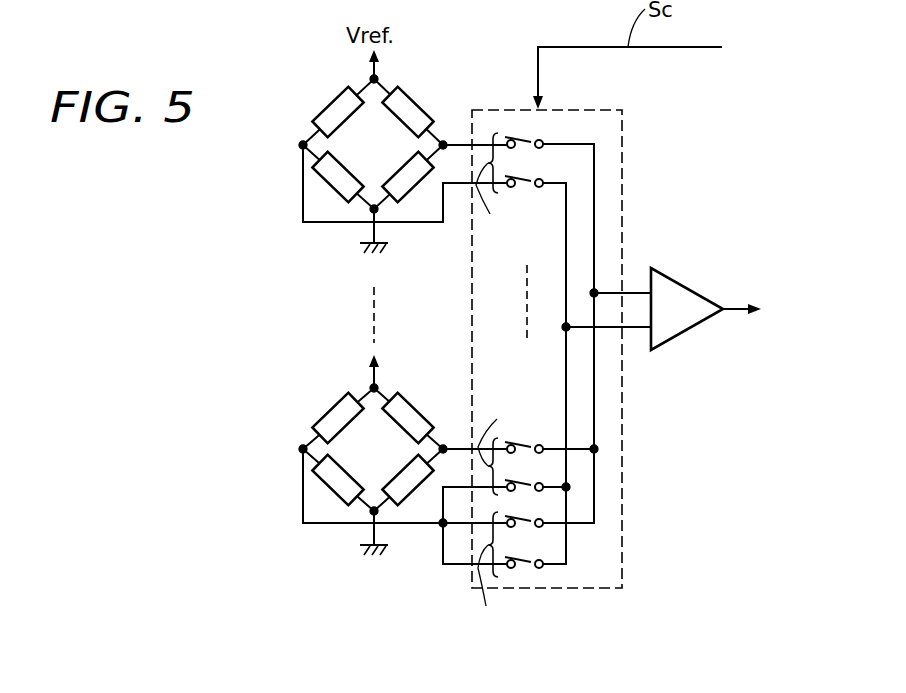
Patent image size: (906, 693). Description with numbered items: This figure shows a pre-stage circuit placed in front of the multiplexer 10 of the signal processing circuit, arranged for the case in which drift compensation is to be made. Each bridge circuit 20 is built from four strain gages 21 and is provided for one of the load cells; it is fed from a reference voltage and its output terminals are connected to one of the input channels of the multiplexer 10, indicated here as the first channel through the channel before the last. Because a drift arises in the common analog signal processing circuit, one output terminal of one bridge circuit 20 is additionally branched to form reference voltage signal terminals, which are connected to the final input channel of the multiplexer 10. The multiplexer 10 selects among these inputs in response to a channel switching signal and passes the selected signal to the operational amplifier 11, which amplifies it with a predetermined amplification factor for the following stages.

The multiplexer 10 is at (596, 109).
The operational amplifier 11 is at (680, 283).
The bridge circuit 20 is at (388, 156).
The strain gage 21 is at (330, 95).